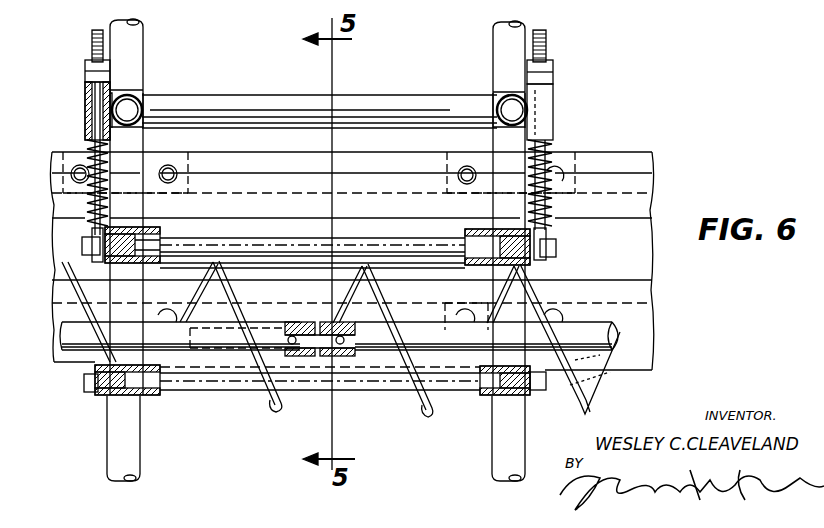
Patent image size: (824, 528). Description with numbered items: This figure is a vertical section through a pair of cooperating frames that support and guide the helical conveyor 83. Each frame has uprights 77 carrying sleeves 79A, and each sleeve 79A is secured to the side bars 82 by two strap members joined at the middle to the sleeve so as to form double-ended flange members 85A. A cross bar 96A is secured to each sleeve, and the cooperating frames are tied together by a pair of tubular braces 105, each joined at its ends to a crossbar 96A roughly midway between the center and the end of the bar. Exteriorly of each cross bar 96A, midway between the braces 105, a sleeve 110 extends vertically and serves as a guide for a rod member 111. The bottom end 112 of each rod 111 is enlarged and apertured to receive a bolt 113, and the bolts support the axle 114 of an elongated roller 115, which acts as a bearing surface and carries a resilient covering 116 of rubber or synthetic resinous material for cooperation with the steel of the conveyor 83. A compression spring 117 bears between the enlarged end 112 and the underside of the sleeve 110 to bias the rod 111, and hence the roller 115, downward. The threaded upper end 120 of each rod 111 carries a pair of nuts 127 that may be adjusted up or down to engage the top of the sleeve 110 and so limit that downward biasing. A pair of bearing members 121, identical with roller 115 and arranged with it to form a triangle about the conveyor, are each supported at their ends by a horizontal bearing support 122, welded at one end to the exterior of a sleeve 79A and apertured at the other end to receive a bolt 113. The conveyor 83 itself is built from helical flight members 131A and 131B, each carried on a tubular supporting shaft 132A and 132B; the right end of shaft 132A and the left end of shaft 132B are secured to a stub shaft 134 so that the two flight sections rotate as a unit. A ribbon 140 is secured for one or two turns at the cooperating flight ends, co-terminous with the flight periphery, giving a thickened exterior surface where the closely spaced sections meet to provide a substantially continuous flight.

The upright 77 is at (136, 32).
The sleeve 79A is at (142, 92).
The side bar 82 is at (628, 176).
The conveyor 83 is at (604, 388).
The double-ended flange member 85A is at (198, 165).
The cross bar 96A is at (140, 106).
The tubular brace 105 is at (400, 100).
The sleeve 110 is at (86, 90).
The rod member 111 is at (95, 110).
The bottom end 112 is at (92, 228).
The bolt 113 is at (84, 246).
The axle 114 is at (466, 264).
The elongated roller 115 is at (432, 243).
The resilient covering 116 is at (155, 230).
The compression spring 117 is at (88, 144).
The upper end 120 is at (92, 33).
The bearing member 121 is at (457, 402).
The horizontal bearing support 122 is at (105, 398).
The nut 127 is at (90, 60).
The helical flight member 131A is at (284, 416).
The helical flight member 131B is at (437, 415).
The tubular supporting shaft 132A is at (168, 352).
The tubular supporting shaft 132B is at (583, 332).
The stub shaft 134 is at (348, 346).
The ribbon 140 is at (198, 266).